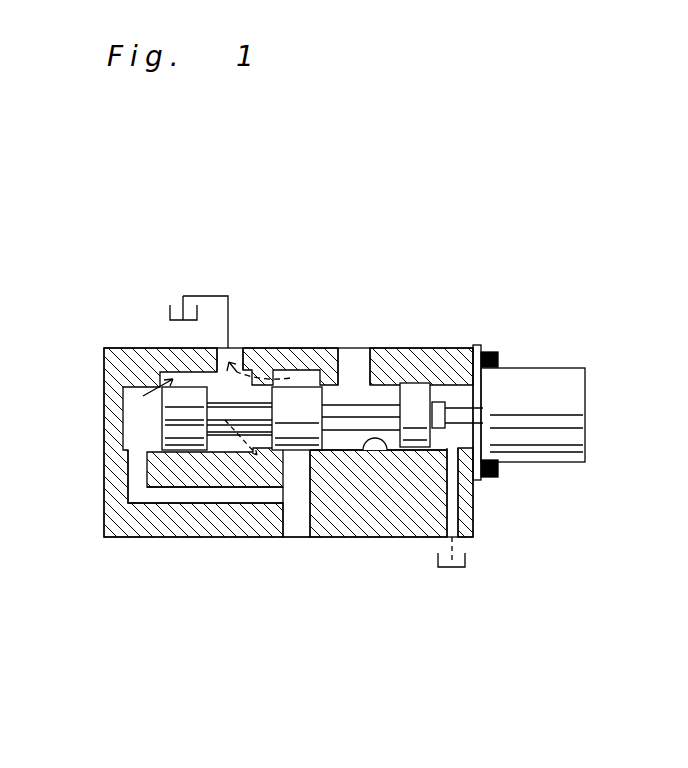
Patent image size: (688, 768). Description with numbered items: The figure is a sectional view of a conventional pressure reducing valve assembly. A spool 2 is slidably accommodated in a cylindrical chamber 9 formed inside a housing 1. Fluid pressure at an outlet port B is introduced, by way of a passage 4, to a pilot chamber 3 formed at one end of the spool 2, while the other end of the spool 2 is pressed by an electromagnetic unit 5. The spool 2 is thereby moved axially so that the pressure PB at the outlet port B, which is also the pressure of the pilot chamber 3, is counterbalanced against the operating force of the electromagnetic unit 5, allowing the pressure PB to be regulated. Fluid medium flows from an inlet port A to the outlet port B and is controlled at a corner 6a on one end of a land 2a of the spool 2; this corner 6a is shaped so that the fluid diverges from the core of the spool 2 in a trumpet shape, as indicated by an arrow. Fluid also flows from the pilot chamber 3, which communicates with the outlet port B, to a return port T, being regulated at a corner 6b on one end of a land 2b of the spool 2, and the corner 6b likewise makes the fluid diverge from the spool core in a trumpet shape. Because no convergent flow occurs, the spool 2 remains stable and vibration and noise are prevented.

The housing 1 is at (450, 355).
The spool 2 is at (413, 410).
The land 2a is at (298, 397).
The land 2b is at (187, 405).
The pilot chamber 3 is at (133, 413).
The passage 4 is at (225, 493).
The electromagnetic unit 5 is at (525, 392).
The corner 6a is at (340, 437).
The corner 6b is at (152, 443).
The cylindrical chamber 9 is at (388, 450).
The inlet port A is at (353, 365).
The outlet port B is at (293, 493).
The return port T is at (233, 365).
The pressure at the outlet port PB is at (302, 513).